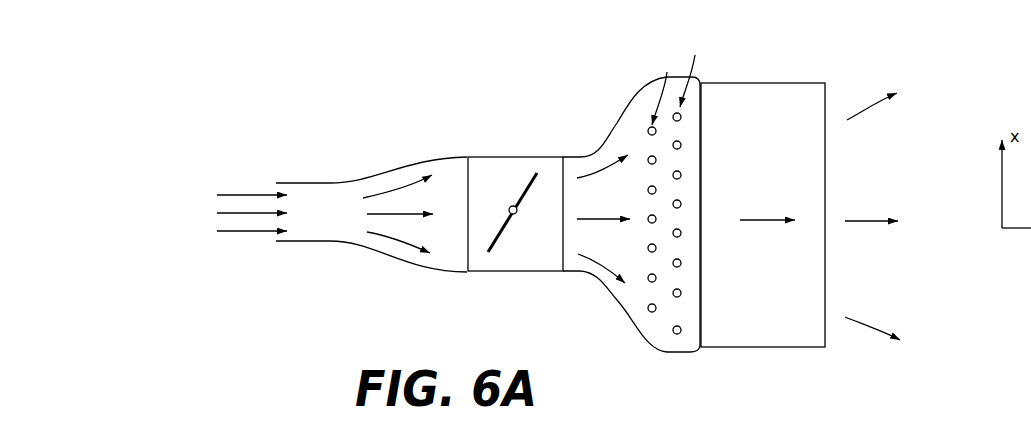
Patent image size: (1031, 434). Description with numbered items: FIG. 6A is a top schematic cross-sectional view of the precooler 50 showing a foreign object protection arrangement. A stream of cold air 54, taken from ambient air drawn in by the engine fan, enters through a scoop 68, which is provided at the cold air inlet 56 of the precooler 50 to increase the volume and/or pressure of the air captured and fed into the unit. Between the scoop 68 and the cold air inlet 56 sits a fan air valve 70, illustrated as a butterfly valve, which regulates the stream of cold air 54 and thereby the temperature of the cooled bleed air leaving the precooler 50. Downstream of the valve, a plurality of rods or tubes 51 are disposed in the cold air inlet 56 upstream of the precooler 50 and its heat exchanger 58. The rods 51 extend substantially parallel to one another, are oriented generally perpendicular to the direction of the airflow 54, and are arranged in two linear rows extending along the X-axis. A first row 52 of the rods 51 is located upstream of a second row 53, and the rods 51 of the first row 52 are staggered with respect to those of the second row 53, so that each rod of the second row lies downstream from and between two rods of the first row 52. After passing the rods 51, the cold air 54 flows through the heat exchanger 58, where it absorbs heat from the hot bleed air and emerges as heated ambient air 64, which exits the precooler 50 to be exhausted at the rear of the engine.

The precooler 50 is at (371, 207).
The rods or tubes 51 is at (682, 145).
The first row 52 is at (648, 309).
The second row 53 is at (687, 317).
The stream of cold air 54 is at (248, 190).
The cold air inlet 56 is at (618, 123).
The heat exchanger 58 is at (812, 102).
The heated ambient air 64 is at (863, 219).
The scoop 68 is at (383, 257).
The fan air valve 70 is at (554, 252).